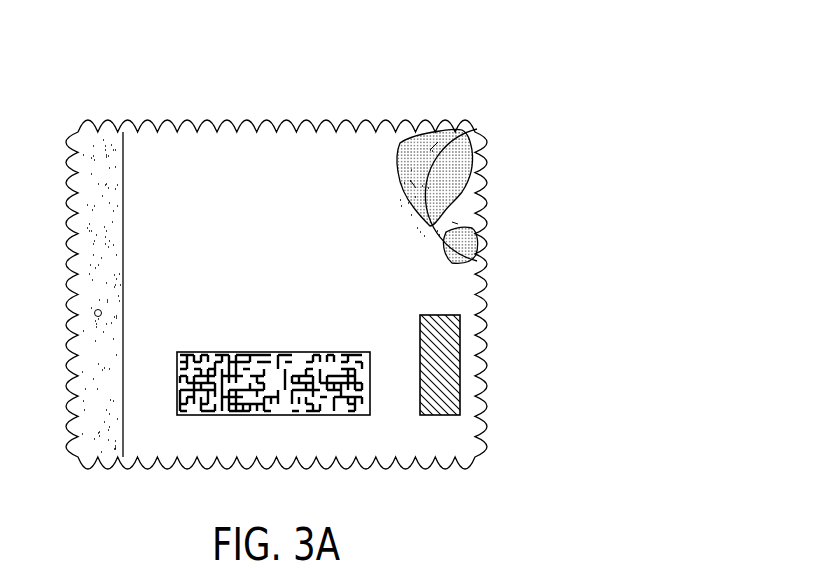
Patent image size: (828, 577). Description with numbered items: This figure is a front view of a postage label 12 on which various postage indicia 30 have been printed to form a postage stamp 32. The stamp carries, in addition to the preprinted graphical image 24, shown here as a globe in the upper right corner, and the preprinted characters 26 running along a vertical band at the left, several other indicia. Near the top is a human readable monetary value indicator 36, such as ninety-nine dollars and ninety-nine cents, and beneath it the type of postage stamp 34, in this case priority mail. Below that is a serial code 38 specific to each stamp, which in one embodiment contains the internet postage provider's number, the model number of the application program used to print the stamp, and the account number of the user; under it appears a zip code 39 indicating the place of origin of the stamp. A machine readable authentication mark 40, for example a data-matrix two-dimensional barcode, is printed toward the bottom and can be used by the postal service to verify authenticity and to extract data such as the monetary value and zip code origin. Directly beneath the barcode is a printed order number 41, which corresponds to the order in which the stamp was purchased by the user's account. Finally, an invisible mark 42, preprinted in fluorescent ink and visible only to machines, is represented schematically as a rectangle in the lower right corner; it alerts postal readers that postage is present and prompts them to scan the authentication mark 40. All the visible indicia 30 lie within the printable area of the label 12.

The postage label 12 is at (452, 92).
The preprinted graphical image 24 is at (468, 200).
The preprinted characters 26 is at (82, 192).
The postage indicia 30 is at (225, 148).
The postage stamp 32 is at (313, 113).
The type of postage stamp 34 is at (173, 272).
The human readable monetary value indicator 36 is at (227, 162).
The serial code 38 is at (333, 300).
The zip code 39 is at (243, 326).
The machine readable authentication mark 40 is at (284, 417).
The printed order number 41 is at (220, 433).
The invisible mark 42 is at (460, 332).